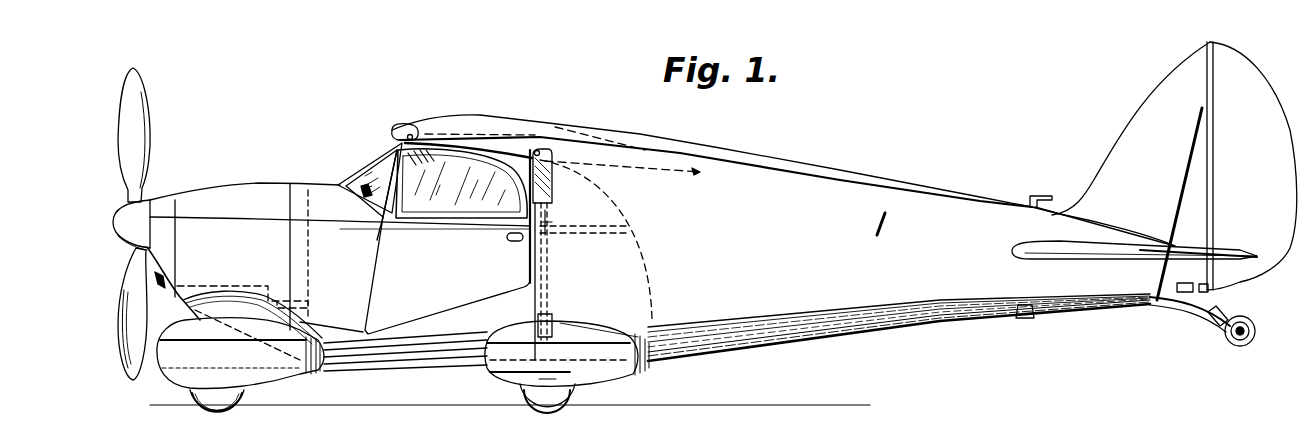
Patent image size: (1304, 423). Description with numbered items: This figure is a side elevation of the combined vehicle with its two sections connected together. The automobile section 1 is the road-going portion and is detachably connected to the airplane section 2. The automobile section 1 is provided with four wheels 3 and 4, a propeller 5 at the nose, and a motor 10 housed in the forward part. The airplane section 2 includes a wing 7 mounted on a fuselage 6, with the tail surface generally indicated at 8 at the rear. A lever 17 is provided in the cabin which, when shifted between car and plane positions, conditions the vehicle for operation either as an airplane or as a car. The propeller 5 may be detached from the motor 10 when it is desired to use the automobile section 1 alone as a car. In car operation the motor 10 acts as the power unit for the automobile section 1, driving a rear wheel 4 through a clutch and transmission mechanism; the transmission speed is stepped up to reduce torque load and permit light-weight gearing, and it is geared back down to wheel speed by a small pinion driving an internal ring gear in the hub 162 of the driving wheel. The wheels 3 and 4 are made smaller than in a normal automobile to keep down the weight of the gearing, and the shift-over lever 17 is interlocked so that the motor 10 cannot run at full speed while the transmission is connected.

The automobile section 1 is at (281, 182).
The airplane section 2 is at (830, 169).
The wheel 3 is at (233, 403).
The rear wheel 4 is at (548, 402).
The propeller 5 is at (141, 128).
The fuselage 6 is at (873, 194).
The wing 7 is at (543, 124).
The tail surface 8 is at (1148, 115).
The motor 10 is at (214, 263).
The lever 17 is at (369, 184).
The hub 162 is at (535, 385).